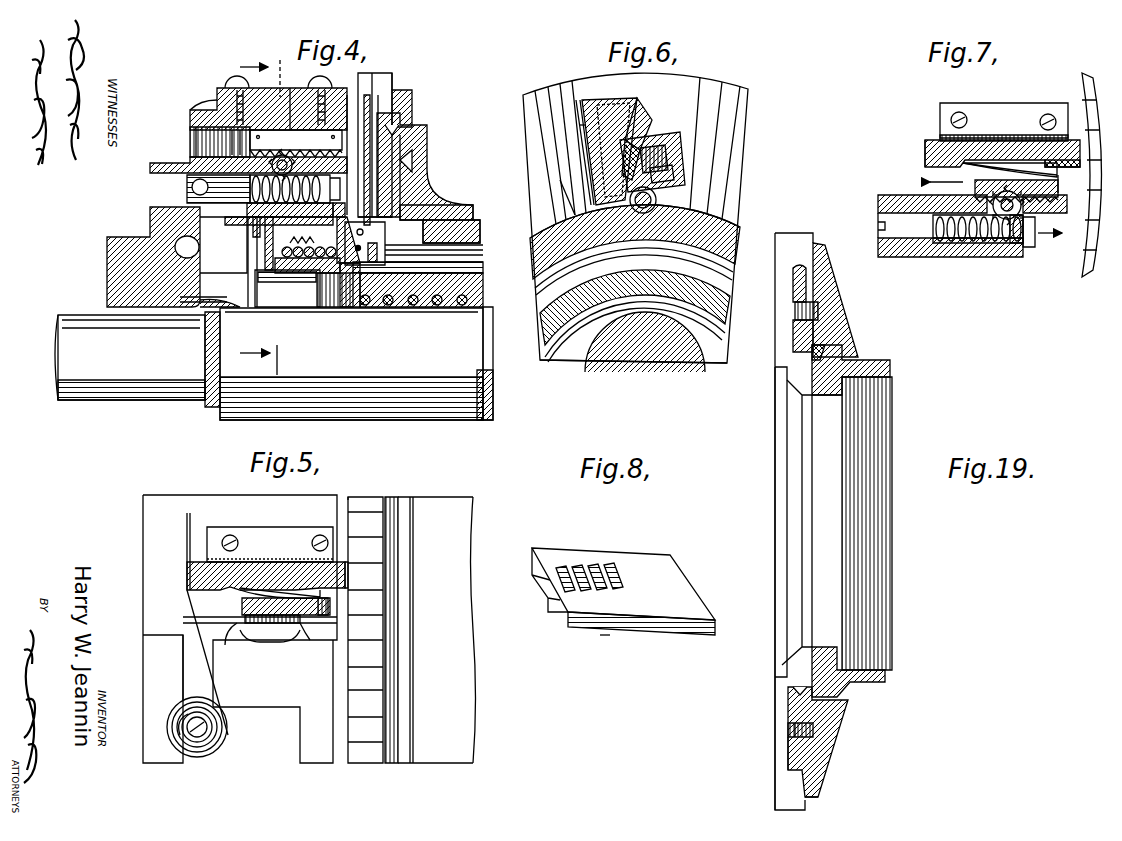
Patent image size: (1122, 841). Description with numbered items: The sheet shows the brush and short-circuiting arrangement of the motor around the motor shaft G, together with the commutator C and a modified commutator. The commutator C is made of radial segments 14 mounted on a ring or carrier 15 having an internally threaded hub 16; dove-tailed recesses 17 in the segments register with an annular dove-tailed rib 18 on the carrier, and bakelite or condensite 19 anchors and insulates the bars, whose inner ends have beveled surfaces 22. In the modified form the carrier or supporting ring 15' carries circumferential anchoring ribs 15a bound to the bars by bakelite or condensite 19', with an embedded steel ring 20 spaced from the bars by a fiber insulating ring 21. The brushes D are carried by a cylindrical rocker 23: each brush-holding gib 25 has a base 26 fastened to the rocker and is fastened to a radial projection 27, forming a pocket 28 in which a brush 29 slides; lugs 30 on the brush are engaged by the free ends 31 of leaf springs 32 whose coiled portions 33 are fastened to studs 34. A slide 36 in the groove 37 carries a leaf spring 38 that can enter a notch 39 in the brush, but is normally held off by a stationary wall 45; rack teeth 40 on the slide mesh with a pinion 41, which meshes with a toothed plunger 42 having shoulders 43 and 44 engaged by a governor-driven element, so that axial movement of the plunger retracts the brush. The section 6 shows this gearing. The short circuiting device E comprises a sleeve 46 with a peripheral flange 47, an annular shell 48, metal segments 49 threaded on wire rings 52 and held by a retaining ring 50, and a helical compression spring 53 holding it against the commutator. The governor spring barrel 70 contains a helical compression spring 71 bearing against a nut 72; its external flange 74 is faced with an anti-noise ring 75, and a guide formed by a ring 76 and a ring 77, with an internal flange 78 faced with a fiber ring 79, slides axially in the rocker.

In FIG. 4, the section line 6- 6 is at (260, 210).
In FIG. 4, the radial segments 14 is at (378, 82).
In FIG. 6, the radial segments 14 is at (735, 105).
In FIG. 7, the radial segments 14 is at (1083, 105).
In FIG. 19, the radial segments 14 is at (782, 302).
In FIG. 5, the radial segments 14 is at (365, 630).
In FIG. 4, the ring or carrier 15 is at (425, 166).
In FIG. 19, the ring or carrier 15 is at (825, 742).
In FIG. 5, the ring or carrier 15 is at (437, 630).
In FIG. 19, the carrier or supporting ring 15' is at (854, 367).
In FIG. 19, the circumferential anchoring ribs 15a is at (850, 690).
In FIG. 4, the internally threaded hub 16 is at (472, 211).
In FIG. 19, the dove-tailed recesses 17 is at (792, 740).
In FIG. 4, the annular dove-tailed rib 18 is at (427, 158).
In FIG. 4, the bakelite or condensite 19 is at (416, 108).
In FIG. 5, the bakelite or condensite 19 is at (396, 616).
In FIG. 19, the bakelite or condensite 19' is at (838, 773).
In FIG. 19, the steel ring 20 is at (790, 732).
In FIG. 19, the fiber insulating ring 21 is at (790, 727).
In FIG. 4, the beveled surfaces 22 is at (425, 249).
In FIG. 19, the beveled surfaces 22 is at (790, 383).
In FIG. 4, the rocker 23 is at (178, 162).
In FIG. 6, the rocker 23 is at (668, 225).
In FIG. 7, the rocker 23 is at (880, 202).
In FIG. 4, the bracket or brush-holding gib 25 is at (230, 86).
In FIG. 6, the bracket or brush-holding gib 25 is at (600, 145).
In FIG. 7, the bracket or brush-holding gib 25 is at (960, 135).
In FIG. 5, the bracket or brush-holding gib 25 is at (276, 562).
In FIG. 6, the base 26 is at (568, 200).
In FIG. 7, the base 26 is at (975, 108).
In FIG. 5, the base 26 is at (256, 540).
In FIG. 4, the radial projection 27 is at (215, 107).
In FIG. 6, the radial projection 27 is at (645, 110).
In FIG. 5, the radial projection 27 is at (236, 630).
In FIG. 6, the recess or pocket 28 is at (578, 100).
In FIG. 7, the recess or pocket 28 is at (996, 140).
In FIG. 5, the recess or pocket 28 is at (210, 592).
In FIG. 4, the brush 29 is at (350, 108).
In FIG. 6, the brush 29 is at (600, 100).
In FIG. 7, the brush 29 is at (928, 158).
In FIG. 5, the brush 29 is at (302, 562).
In FIG. 8, the brush 29 is at (623, 591).
In FIG. 8, the lugs 30 is at (540, 600).
In FIG. 4, the free ends 31 is at (200, 143).
In FIG. 5, the free ends 31 is at (186, 526).
In FIG. 5, the leaf springs 32 is at (198, 650).
In FIG. 5, the coiled portions 33 is at (228, 738).
In FIG. 5, the studs 34 is at (185, 718).
In FIG. 4, the slide 36 is at (296, 143).
In FIG. 6, the slide 36 is at (660, 140).
In FIG. 7, the slide 36 is at (975, 188).
In FIG. 5, the slide 36 is at (300, 623).
In FIG. 4, the groove 37 is at (300, 100).
In FIG. 6, the groove 37 is at (638, 135).
In FIG. 5, the groove 37 is at (275, 625).
In FIG. 7, the leaf spring 38 is at (975, 170).
In FIG. 5, the leaf spring 38 is at (245, 595).
In FIG. 7, the notch 39 is at (1003, 120).
In FIG. 5, the notch 39 is at (215, 567).
In FIG. 8, the notch 39 is at (615, 582).
In FIG. 4, the rack teeth 40 is at (200, 133).
In FIG. 6, the rack teeth 40 is at (668, 148).
In FIG. 7, the rack teeth 40 is at (995, 243).
In FIG. 4, the pinion 41 is at (232, 146).
In FIG. 6, the pinion 41 is at (674, 172).
In FIG. 7, the pinion 41 is at (1015, 245).
In FIG. 4, the toothed plunger 42 is at (250, 183).
In FIG. 6, the toothed plunger 42 is at (656, 200).
In FIG. 7, the toothed plunger 42 is at (950, 257).
In FIG. 4, the shoulder 43 is at (200, 190).
In FIG. 7, the shoulder 43 is at (933, 230).
In FIG. 4, the shoulder 44 is at (364, 160).
In FIG. 7, the shoulder 44 is at (1030, 247).
In FIG. 7, the stationary wall 45 is at (1010, 140).
In FIG. 5, the stationary wall 45 is at (350, 575).
In FIG. 4, the annular carrier or sleeve 46 is at (347, 265).
In FIG. 4, the peripheral flange 47 is at (342, 213).
In FIG. 4, the annular shell 48 is at (346, 255).
In FIG. 4, the metal segments 49 is at (333, 300).
In FIG. 4, the retaining ring 50 is at (380, 256).
In FIG. 4, the wire rings 52 is at (363, 229).
In FIG. 4, the helical compression spring 53 is at (287, 288).
In FIG. 4, the governor spring barrel 70 is at (413, 306).
In FIG. 4, the helical compression spring 71 is at (437, 306).
In FIG. 4, the nut 72 is at (262, 262).
In FIG. 4, the external flange 74 is at (257, 255).
In FIG. 4, the anti-noise ring 75 is at (274, 258).
In FIG. 4, the ring 76 is at (262, 214).
In FIG. 4, the ring 77 is at (302, 203).
In FIG. 4, the internal flange 78 is at (173, 257).
In FIG. 4, the fiber ring 79 is at (253, 235).
In FIG. 4, the commutator C is at (402, 74).
In FIG. 6, the commutator C is at (568, 138).
In FIG. 19, the commutator C is at (759, 588).
In FIG. 5, the commutator C is at (362, 485).
In FIG. 4, the brushes D is at (339, 140).
In FIG. 6, the brushes D is at (580, 130).
In FIG. 7, the brushes D is at (922, 148).
In FIG. 5, the brushes D is at (158, 573).
In FIG. 8, the brushes D is at (603, 653).
In FIG. 4, the short circuiting device E is at (372, 233).
In FIG. 4, the motor shaft G is at (274, 363).
In FIG. 6, the motor shaft G is at (648, 362).